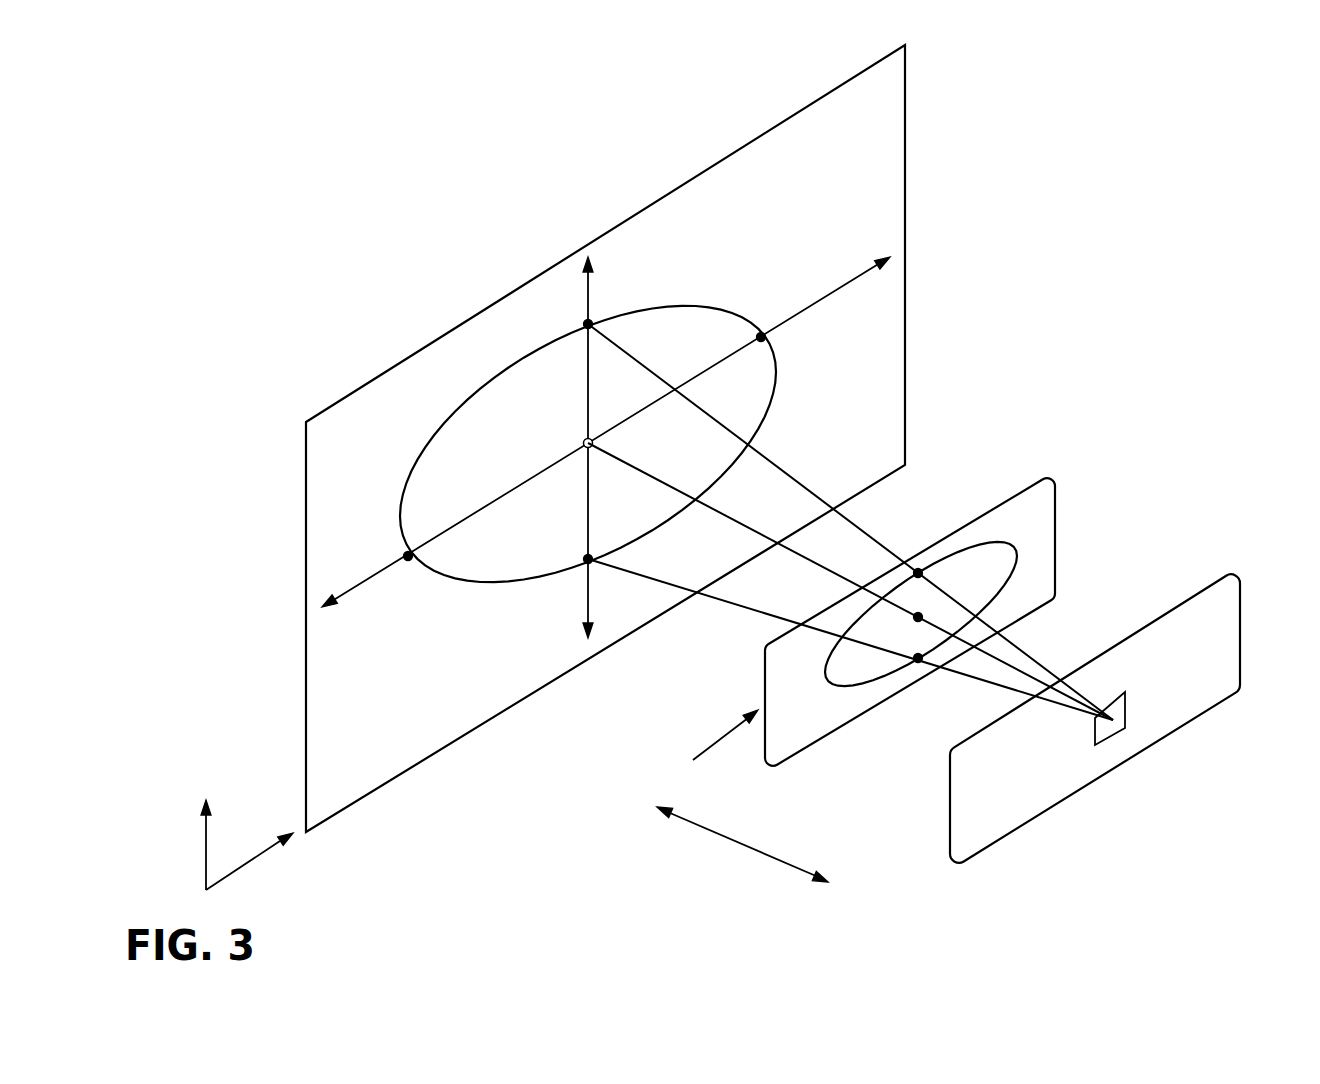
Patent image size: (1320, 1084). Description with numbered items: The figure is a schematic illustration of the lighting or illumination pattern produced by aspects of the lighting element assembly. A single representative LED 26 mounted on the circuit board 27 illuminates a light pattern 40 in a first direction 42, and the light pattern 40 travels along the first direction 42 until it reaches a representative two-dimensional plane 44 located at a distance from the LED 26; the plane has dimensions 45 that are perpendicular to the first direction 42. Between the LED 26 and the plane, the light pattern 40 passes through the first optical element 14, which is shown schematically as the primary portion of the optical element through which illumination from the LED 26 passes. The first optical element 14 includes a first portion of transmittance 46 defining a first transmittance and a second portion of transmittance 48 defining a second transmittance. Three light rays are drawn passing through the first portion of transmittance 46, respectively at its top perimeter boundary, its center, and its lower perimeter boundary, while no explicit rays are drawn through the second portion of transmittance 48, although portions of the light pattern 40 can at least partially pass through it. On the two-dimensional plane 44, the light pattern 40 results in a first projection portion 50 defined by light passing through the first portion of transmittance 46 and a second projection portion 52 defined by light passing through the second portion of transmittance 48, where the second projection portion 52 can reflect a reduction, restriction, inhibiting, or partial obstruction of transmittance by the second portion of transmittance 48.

The first optical element 14 is at (710, 745).
The LED 26 is at (1103, 732).
The circuit board 27 is at (1197, 688).
The light pattern 40 is at (910, 613).
The first direction 42 is at (752, 852).
The two-dimensional plane 44 is at (770, 128).
The dimensions 45 is at (203, 850).
The first portion of transmittance 46 is at (893, 680).
The second portion of transmittance 48 is at (808, 722).
The first projection portion 50 is at (513, 453).
The second projection portion 52 is at (838, 205).